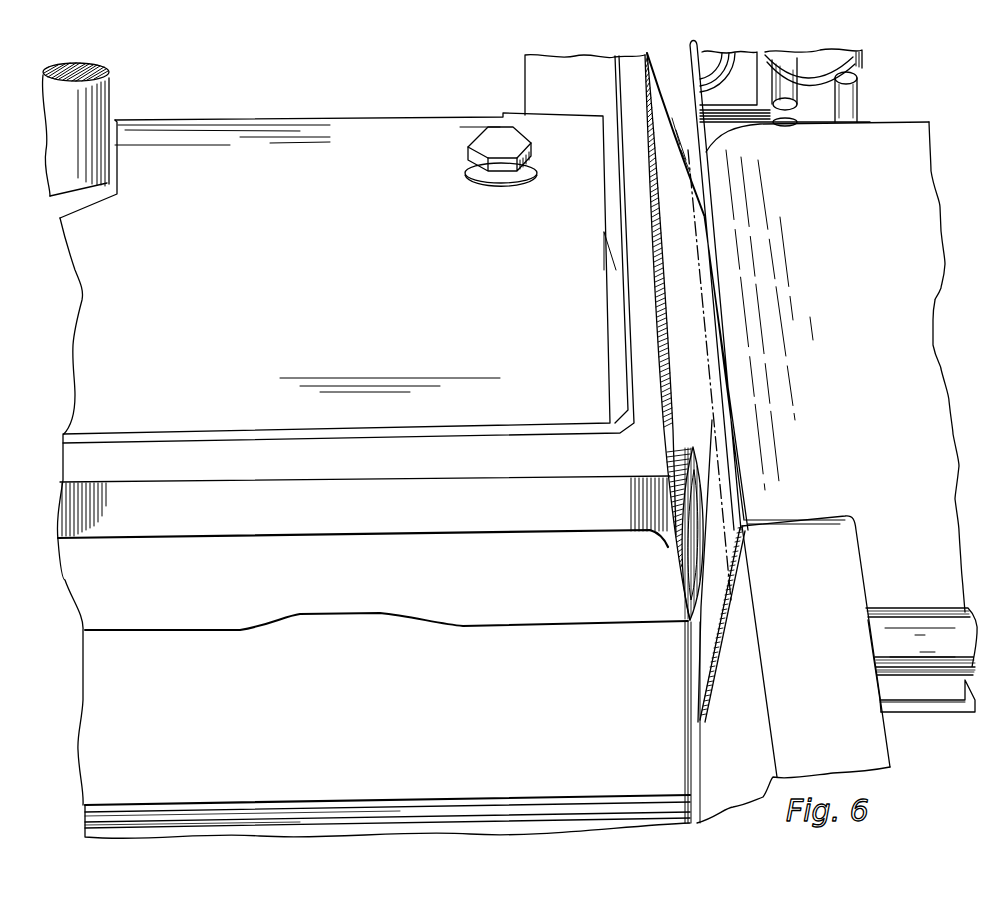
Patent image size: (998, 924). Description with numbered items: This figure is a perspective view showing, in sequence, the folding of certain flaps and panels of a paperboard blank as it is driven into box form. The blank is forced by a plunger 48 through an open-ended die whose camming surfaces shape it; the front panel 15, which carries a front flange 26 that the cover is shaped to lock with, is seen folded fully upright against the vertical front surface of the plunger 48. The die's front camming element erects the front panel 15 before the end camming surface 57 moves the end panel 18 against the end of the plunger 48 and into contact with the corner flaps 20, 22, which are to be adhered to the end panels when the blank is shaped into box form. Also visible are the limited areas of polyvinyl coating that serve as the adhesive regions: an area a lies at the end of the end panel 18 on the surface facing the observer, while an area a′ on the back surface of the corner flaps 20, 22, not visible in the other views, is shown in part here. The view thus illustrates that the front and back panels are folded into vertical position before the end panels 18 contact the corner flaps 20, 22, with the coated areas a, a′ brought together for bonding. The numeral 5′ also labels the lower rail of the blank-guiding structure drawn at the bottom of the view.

The plunger 48 is at (346, 297).
The front flange 26 is at (178, 593).
The front panel 15 is at (364, 727).
The base rail 5′ is at (176, 802).
The corner flap 20 is at (692, 497).
The corner flap 22 is at (676, 203).
The end panel 18 is at (706, 385).
The end camming surface 57 is at (740, 302).
The polyvinyl coating area a is at (733, 517).
The polyvinyl coating area a′ is at (704, 606).